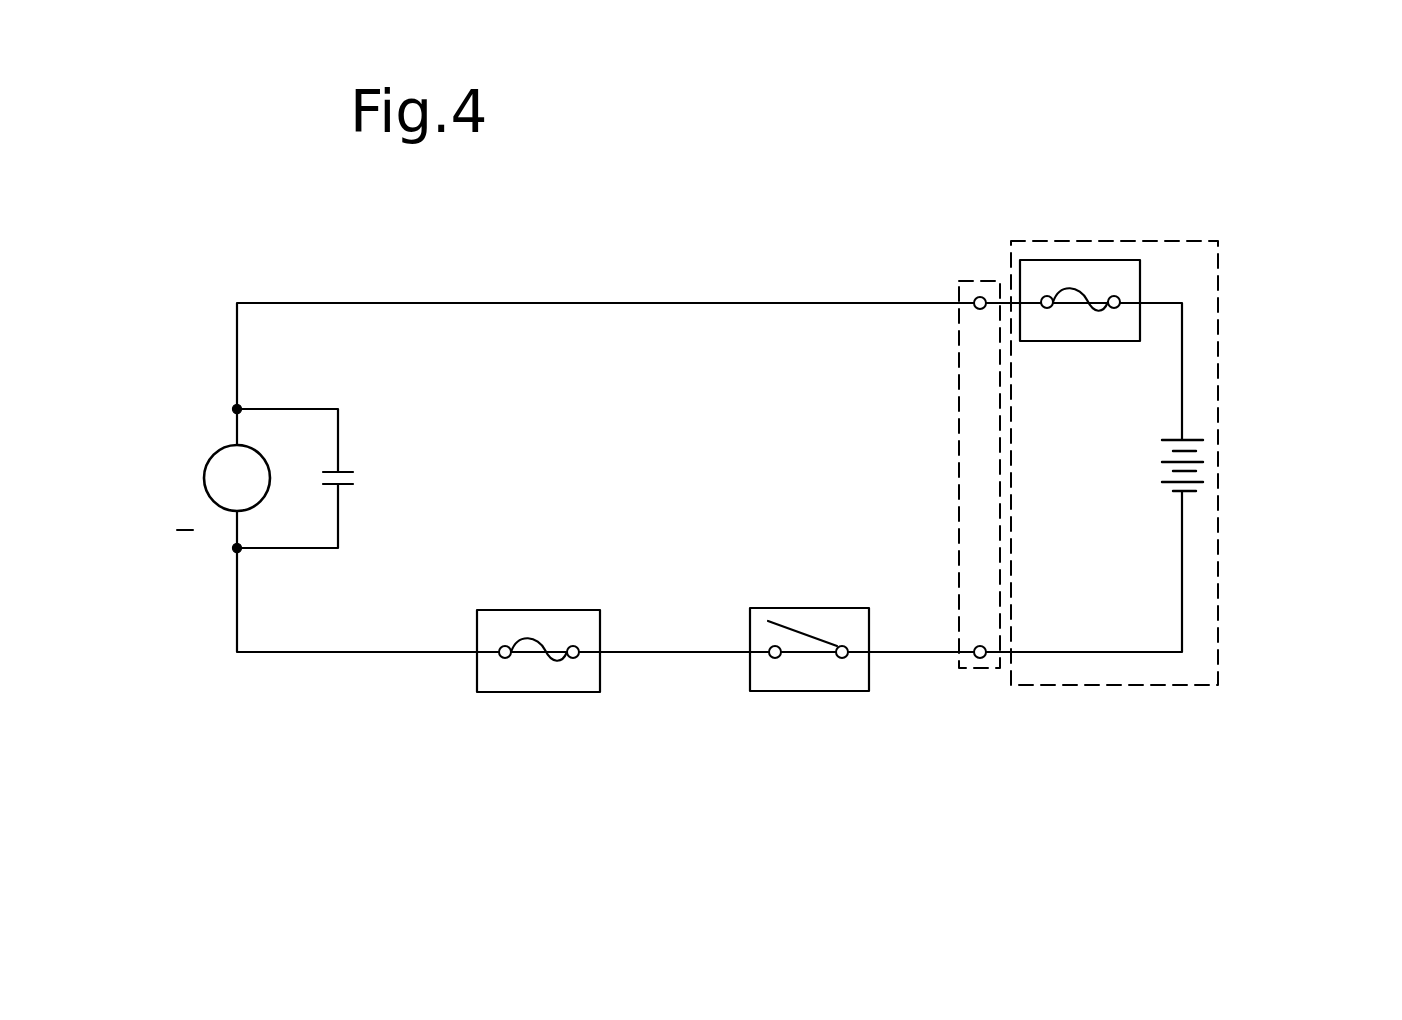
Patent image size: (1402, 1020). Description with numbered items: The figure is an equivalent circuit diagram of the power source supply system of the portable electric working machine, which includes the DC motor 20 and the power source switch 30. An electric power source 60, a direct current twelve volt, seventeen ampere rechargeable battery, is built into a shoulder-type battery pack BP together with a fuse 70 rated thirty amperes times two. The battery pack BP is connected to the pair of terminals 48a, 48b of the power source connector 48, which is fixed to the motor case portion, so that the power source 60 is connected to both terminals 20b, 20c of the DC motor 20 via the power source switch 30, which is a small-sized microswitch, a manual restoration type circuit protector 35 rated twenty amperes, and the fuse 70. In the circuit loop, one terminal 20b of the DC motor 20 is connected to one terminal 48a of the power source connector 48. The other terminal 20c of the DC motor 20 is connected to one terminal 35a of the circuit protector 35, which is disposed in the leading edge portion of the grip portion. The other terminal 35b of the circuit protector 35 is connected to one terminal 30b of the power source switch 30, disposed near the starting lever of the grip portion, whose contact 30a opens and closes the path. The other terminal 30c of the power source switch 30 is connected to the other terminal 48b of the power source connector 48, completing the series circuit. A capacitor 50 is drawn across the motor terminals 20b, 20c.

The DC motor 20 is at (204, 488).
The terminal of the DC motor 20b is at (240, 407).
The terminal of the DC motor 20c is at (243, 554).
The capacitor 50 is at (352, 480).
The circuit protector 35 is at (535, 693).
The terminal of the circuit protector 35a is at (477, 654).
The terminal of the circuit protector 35b is at (600, 635).
The power source switch 30 is at (808, 692).
The switch blade 30a is at (778, 620).
The terminal of the power source switch 30b is at (750, 655).
The terminal of the power source switch 30c is at (870, 655).
The power source connector 48 is at (958, 478).
The terminal of the power source connector 48a is at (980, 296).
The terminal of the power source connector 48b is at (980, 660).
The fuse 70 is at (1082, 260).
The electric power source 60 is at (1197, 468).
The battery pack BP is at (1219, 571).